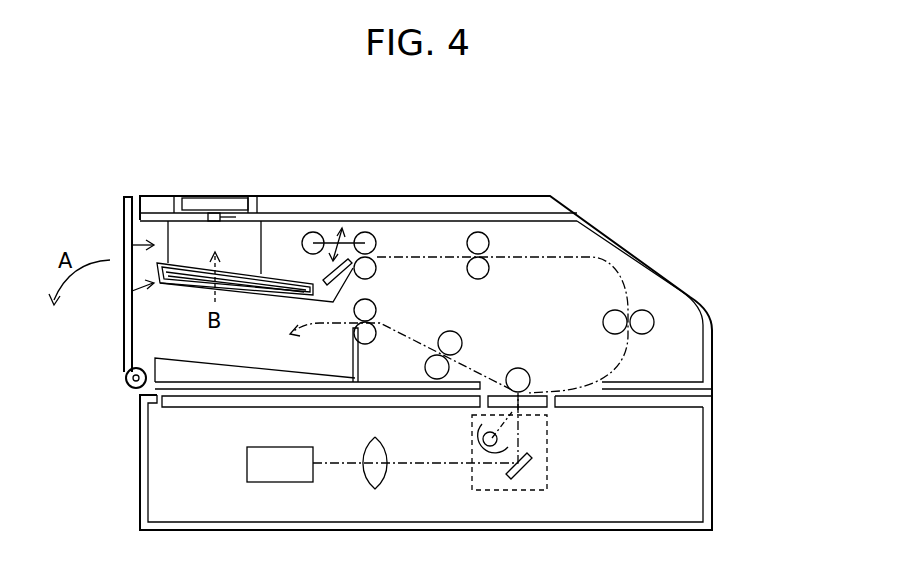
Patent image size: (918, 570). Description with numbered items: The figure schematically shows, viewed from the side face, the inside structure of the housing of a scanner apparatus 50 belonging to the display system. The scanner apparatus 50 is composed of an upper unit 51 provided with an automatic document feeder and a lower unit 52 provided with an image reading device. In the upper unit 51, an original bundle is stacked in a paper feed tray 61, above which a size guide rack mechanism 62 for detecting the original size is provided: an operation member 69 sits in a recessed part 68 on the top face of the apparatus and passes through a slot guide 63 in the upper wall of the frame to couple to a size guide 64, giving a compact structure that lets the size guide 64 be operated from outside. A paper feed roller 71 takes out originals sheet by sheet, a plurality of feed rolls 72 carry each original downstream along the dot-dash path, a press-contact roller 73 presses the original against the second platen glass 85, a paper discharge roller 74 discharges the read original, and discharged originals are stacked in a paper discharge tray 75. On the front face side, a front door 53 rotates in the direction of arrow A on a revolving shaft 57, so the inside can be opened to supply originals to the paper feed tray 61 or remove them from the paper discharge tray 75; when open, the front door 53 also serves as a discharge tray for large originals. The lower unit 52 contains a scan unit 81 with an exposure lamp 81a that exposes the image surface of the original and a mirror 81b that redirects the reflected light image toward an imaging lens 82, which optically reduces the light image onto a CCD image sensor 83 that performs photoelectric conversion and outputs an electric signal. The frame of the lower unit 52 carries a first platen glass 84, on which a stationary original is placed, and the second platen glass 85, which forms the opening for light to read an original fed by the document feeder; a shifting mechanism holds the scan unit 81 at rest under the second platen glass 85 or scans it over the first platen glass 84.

The scanner apparatus 50 is at (584, 172).
The upper unit 51 is at (707, 280).
The lower unit 52 is at (718, 448).
The front door 53 is at (122, 345).
The revolving shaft 57 is at (127, 378).
The paper feed tray 61 is at (122, 288).
The size guide rack mechanism 62 is at (123, 238).
The slot guide 63 is at (228, 216).
The size guide 64 is at (253, 237).
The recessed part 68 is at (177, 200).
The operation member 69 is at (221, 198).
The paper feed roller 71 is at (348, 234).
The feed rolls 72 is at (484, 275).
The press-contact roller 73 is at (522, 368).
The paper discharge roller 74 is at (377, 305).
The paper discharge tray 75 is at (177, 377).
The scan unit 81 is at (547, 478).
The exposure lamp 81a is at (478, 455).
The mirror 81b is at (527, 476).
The imaging lens 82 is at (377, 440).
The CCD image sensor 83 is at (283, 447).
The first platen glass 84 is at (200, 407).
The second platen glass 85 is at (527, 400).